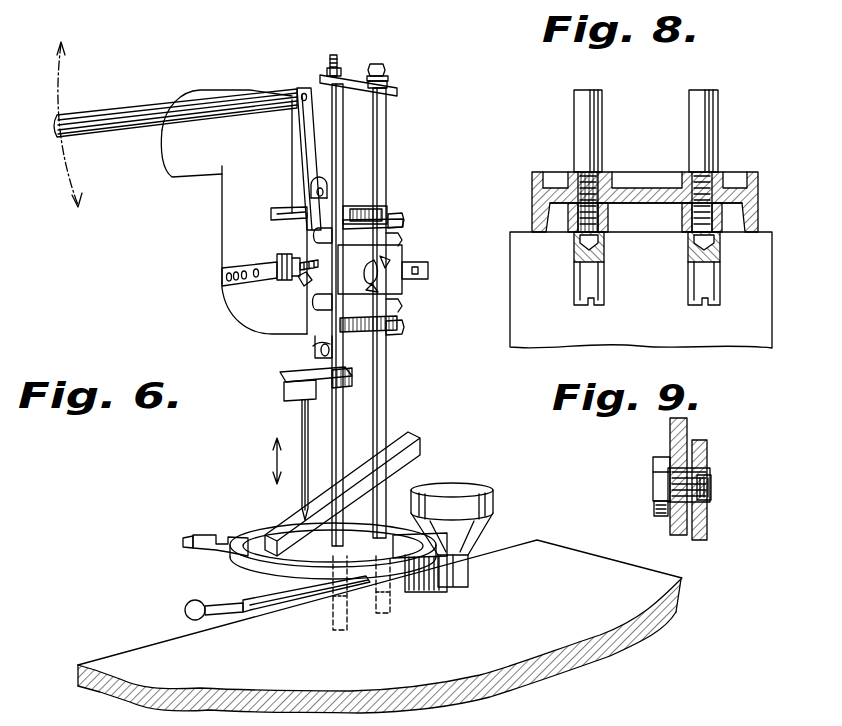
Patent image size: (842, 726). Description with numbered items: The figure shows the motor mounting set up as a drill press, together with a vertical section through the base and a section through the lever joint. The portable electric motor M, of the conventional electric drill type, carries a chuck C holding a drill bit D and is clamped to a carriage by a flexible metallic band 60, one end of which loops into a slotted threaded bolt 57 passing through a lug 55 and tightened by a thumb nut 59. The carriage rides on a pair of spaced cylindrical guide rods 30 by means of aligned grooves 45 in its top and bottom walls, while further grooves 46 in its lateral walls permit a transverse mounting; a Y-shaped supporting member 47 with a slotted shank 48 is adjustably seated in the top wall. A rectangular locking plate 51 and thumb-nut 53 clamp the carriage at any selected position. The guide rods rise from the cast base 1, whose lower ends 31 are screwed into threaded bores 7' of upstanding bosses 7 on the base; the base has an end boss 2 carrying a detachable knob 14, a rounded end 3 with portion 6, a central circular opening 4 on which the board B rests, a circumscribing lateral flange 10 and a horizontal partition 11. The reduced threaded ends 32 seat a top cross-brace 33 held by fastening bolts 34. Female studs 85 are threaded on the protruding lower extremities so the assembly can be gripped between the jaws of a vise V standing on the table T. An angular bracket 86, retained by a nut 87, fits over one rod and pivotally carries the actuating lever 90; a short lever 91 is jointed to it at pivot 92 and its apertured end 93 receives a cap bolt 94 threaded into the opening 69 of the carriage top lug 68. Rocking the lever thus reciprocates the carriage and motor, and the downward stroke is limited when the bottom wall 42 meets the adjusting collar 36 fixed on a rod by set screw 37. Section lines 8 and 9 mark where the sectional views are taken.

In FIG. 6, the base 1 is at (433, 586).
In FIG. 6, the boss 2 is at (470, 580).
In FIG. 6, the rounded end 3 is at (184, 541).
In FIG. 6, the circular opening 4 is at (270, 527).
In FIG. 6, the portion of base 6 is at (214, 551).
In FIG. 8, the upstanding bosses 7 is at (647, 159).
In FIG. 8, the threaded bores 7' is at (649, 156).
In FIG. 6, the section line 8— 8 is at (320, 560).
In FIG. 6, the section line 9— 9 is at (309, 176).
In FIG. 8, the lateral flange 10 is at (532, 201).
In FIG. 8, the horizontal partition 11 is at (638, 203).
In FIG. 6, the knob 14 is at (476, 490).
In FIG. 6, the guide rods 30 is at (378, 136).
In FIG. 8, the guide rods 30 is at (689, 100).
In FIG. 8, the lower ends 31 is at (578, 214).
In FIG. 6, the threaded ends 32 is at (334, 55).
In FIG. 6, the top cross-brace 33 is at (347, 76).
In FIG. 6, the fastening bolts 34 is at (327, 73).
In FIG. 6, the adjusting collar 36 is at (349, 383).
In FIG. 6, the set screw 37 is at (283, 375).
In FIG. 6, the bottom wall 42 is at (314, 348).
In FIG. 6, the grooves 45 is at (405, 219).
In FIG. 6, the grooves 46 is at (318, 236).
In FIG. 6, the Y-shaped supporting member 47 is at (273, 214).
In FIG. 6, the shank 48 is at (384, 210).
In FIG. 6, the locking plate 51 is at (362, 268).
In FIG. 6, the thumb-nut 53 is at (368, 280).
In FIG. 6, the lug 55 is at (282, 256).
In FIG. 6, the threaded bolt 57 is at (312, 266).
In FIG. 6, the thumb nut 59 is at (302, 285).
In FIG. 6, the flexible metallic band 60 is at (226, 284).
In FIG. 6, the top lug 68 is at (311, 190).
In FIG. 9, the top lug 68 is at (707, 450).
In FIG. 9, the threaded opening 69 is at (708, 507).
In FIG. 6, the female studs 85 is at (347, 617).
In FIG. 8, the female studs 85 is at (688, 278).
In FIG. 6, the angular bracket 86 is at (390, 76).
In FIG. 6, the nut 87 is at (378, 63).
In FIG. 6, the actuating lever 90 is at (97, 113).
In FIG. 6, the short lever 91 is at (304, 125).
In FIG. 9, the short lever 91 is at (686, 430).
In FIG. 6, the pivot 92 is at (300, 92).
In FIG. 9, the aperture 93 is at (676, 512).
In FIG. 6, the cap bolt 94 is at (323, 193).
In FIG. 9, the cap bolt 94 is at (656, 487).
In FIG. 6, the board B is at (419, 448).
In FIG. 6, the chuck C is at (290, 396).
In FIG. 6, the drill bit D is at (308, 448).
In FIG. 6, the portable electric motor M is at (223, 236).
In FIG. 6, the table T is at (128, 660).
In FIG. 6, the vise V is at (262, 604).
In FIG. 8, the vise V is at (706, 335).